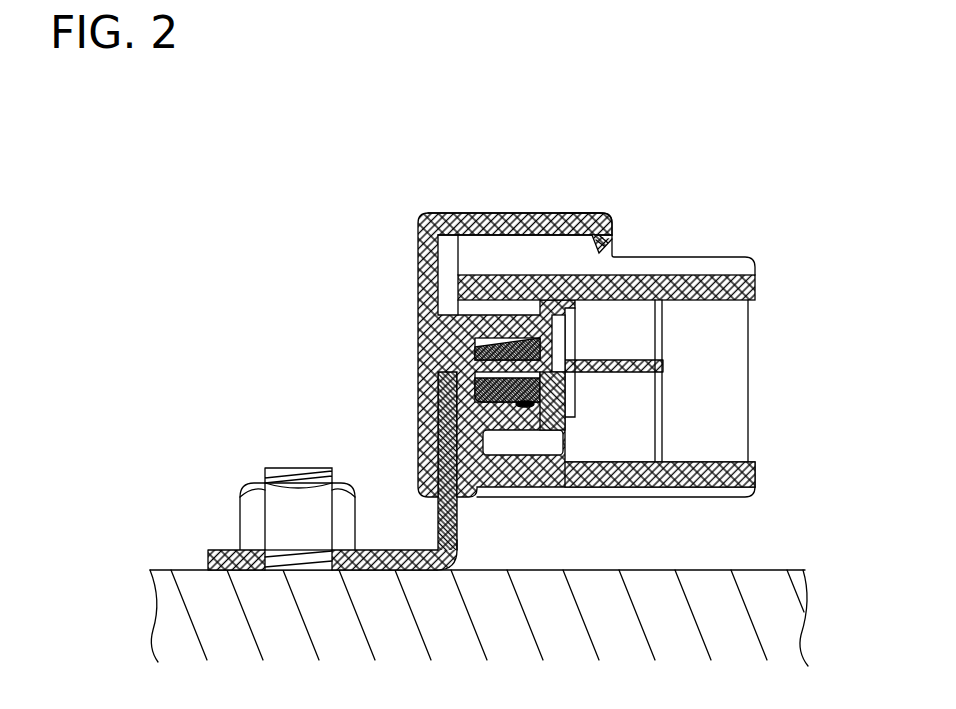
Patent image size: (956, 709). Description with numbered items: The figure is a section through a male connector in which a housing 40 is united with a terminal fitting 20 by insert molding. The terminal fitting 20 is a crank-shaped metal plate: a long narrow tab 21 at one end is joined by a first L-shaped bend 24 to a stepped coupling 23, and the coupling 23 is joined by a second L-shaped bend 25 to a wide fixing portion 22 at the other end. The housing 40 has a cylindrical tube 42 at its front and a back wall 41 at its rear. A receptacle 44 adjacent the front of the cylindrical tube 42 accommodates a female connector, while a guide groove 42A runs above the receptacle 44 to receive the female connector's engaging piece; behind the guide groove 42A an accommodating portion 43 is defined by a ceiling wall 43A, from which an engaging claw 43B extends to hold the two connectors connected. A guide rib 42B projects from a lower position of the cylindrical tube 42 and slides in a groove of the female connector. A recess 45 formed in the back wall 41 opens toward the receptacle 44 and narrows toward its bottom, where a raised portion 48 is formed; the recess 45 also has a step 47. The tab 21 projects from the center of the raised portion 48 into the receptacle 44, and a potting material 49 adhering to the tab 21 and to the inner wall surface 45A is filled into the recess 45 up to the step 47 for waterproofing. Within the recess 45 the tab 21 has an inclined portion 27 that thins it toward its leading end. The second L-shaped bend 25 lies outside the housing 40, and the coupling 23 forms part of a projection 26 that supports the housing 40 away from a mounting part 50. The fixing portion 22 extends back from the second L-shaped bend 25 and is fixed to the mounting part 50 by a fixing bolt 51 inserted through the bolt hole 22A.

The terminal fitting 20 is at (424, 525).
The tab 21 is at (620, 374).
The fixing portion 22 is at (239, 559).
The bolt hole 22A is at (323, 571).
The coupling 23 is at (447, 421).
The first L-shaped bend 24 is at (450, 363).
The second L-shaped bend 25 is at (446, 556).
The projection 26 is at (458, 508).
The inclined portion 27 is at (516, 401).
The housing 40 is at (585, 325).
The back wall 41 is at (431, 452).
The cylindrical tube 42 is at (592, 482).
The guide groove 42A is at (730, 268).
The guide rib 42B is at (666, 490).
The accommodating portion 43 is at (556, 212).
The ceiling wall 43A is at (577, 213).
The engaging claw 43B is at (605, 222).
The receptacle 44 is at (700, 283).
The recess 45 is at (545, 398).
The inner wall surface 45A is at (534, 403).
The step 47 is at (563, 330).
The raised portion 48 is at (475, 346).
The potting material 49 is at (522, 350).
The mounting part 50 is at (220, 592).
The fixing bolt 51 is at (289, 522).